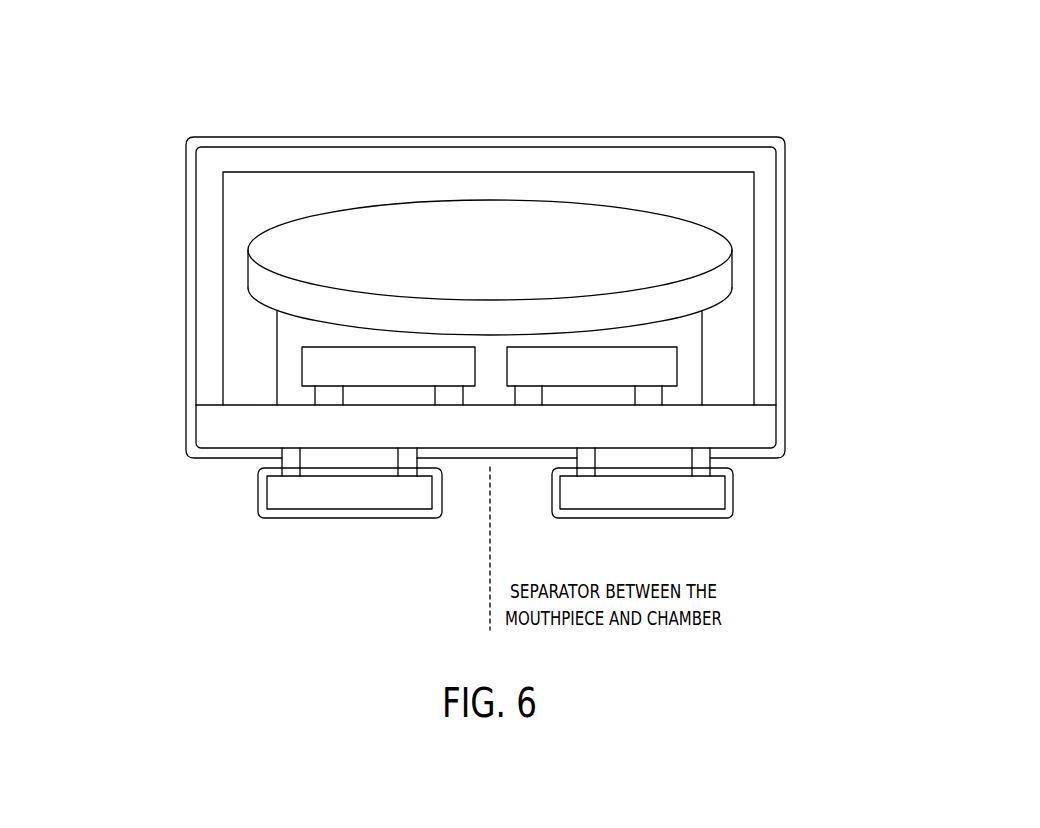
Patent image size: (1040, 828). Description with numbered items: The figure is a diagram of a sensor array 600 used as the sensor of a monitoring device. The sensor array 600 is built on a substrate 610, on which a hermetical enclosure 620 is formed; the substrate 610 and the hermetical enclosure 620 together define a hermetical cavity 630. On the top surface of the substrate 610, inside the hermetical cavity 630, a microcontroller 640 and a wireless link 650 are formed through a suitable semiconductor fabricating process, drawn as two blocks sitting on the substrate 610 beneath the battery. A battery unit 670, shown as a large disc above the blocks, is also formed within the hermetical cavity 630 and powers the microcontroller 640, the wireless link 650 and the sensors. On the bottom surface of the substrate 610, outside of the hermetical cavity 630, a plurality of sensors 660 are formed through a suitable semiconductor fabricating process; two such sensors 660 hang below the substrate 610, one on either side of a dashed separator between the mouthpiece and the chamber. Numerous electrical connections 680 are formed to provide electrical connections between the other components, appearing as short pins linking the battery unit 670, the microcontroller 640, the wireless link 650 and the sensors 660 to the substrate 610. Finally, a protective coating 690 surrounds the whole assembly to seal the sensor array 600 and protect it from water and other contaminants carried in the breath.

The sensor array 600 is at (588, 91).
The substrate 610 is at (768, 422).
The hermetical enclosure 620 is at (765, 215).
The hermetical cavity 630 is at (742, 285).
The microcontroller 640 is at (302, 368).
The wireless link 650 is at (670, 365).
The sensors 660 is at (292, 490).
The battery unit 670 is at (322, 228).
The electrical connections 680 is at (710, 345).
The protective coating 690 is at (783, 152).